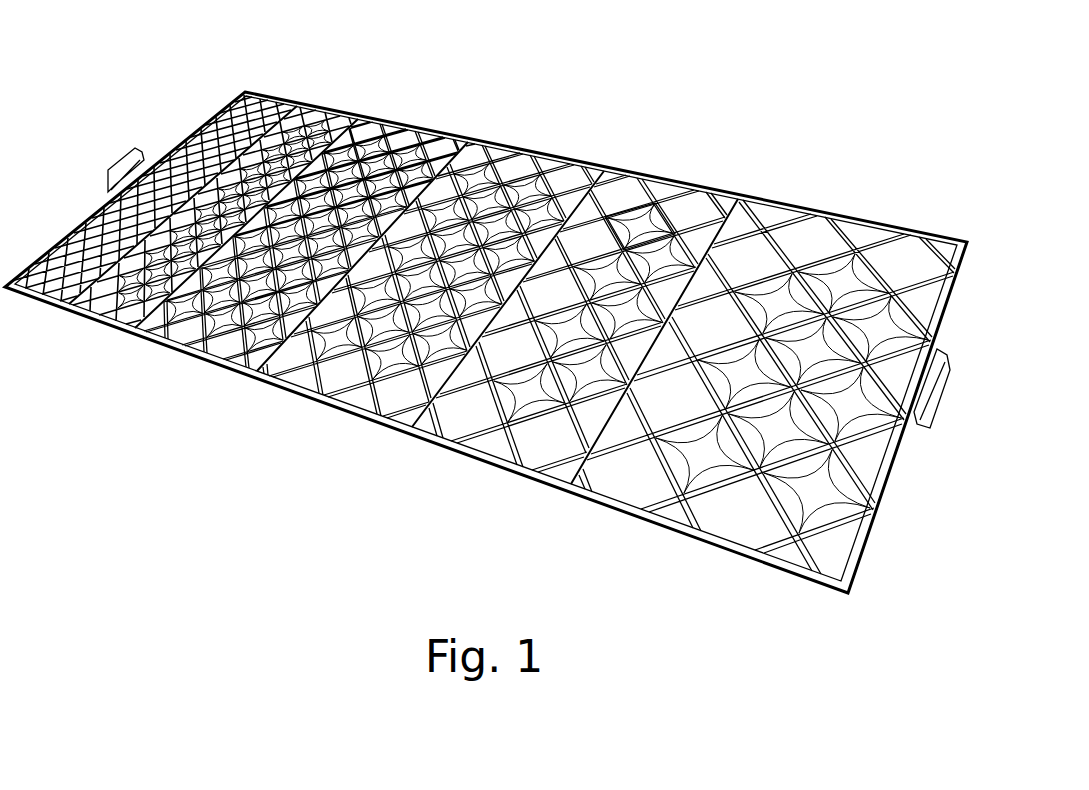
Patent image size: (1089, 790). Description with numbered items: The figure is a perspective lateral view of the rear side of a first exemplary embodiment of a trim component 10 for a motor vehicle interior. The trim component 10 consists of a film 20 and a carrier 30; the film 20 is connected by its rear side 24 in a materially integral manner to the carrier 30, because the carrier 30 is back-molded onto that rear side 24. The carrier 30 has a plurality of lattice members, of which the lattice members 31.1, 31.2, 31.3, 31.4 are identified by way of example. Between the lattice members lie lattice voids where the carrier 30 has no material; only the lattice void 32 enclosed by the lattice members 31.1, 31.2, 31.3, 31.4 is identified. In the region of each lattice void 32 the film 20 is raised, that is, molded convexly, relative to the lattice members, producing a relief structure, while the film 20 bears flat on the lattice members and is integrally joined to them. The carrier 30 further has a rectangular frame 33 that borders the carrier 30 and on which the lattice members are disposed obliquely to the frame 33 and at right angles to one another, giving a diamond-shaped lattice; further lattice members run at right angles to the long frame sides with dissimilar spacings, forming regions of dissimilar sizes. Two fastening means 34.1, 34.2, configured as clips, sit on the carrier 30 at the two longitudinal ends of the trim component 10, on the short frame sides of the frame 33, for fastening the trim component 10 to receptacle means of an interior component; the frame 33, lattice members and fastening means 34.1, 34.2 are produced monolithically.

The trim component 10 is at (851, 163).
The film 20 is at (655, 215).
The rear side 24 is at (640, 226).
The carrier 30 is at (227, 373).
The lattice member 31.1 is at (590, 170).
The lattice member 31.2 is at (697, 197).
The lattice member 31.3 is at (610, 260).
The lattice member 31.4 is at (733, 205).
The lattice void 32 is at (643, 212).
The frame 33 is at (962, 268).
The fastening means 34.1 is at (123, 150).
The fastening means 34.2 is at (953, 385).